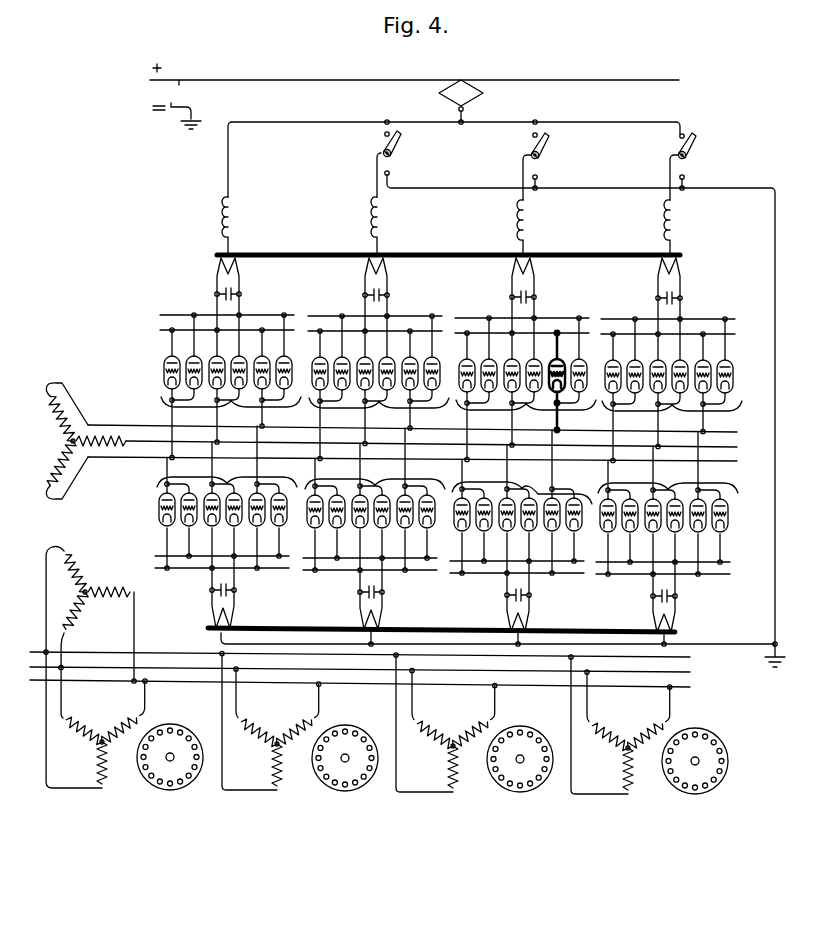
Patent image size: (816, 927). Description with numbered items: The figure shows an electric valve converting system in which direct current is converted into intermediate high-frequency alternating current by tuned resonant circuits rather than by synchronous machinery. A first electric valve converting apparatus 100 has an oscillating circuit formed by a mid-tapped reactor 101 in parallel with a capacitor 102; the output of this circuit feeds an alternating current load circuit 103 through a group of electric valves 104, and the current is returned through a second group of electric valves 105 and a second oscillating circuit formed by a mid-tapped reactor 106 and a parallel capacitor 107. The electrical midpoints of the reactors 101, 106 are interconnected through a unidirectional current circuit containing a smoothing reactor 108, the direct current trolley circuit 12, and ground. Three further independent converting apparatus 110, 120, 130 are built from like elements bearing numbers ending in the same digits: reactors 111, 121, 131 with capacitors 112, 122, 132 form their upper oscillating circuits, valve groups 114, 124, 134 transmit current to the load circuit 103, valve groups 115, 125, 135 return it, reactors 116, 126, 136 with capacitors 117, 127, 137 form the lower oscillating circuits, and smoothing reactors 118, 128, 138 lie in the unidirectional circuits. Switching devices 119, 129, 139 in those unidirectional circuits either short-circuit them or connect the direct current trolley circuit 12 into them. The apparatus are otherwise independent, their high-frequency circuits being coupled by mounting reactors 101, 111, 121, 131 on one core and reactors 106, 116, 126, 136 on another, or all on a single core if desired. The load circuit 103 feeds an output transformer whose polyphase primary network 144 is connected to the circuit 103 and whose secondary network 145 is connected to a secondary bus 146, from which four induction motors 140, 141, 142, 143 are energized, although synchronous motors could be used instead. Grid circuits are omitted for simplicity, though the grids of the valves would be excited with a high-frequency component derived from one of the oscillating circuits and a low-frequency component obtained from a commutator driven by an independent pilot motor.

The direct current trolley circuit 12 is at (177, 107).
The electric valve converting apparatus 100 is at (202, 292).
The mid-tapped reactor 101 is at (240, 267).
The capacitor 102 is at (233, 297).
The alternating current load circuit 103 is at (149, 456).
The group of electric valves 104 is at (231, 424).
The second group of electric valves 105 is at (227, 459).
The mid-tapped reactor 106 is at (211, 621).
The capacitor 107 is at (230, 594).
The smoothing reactor 108 is at (235, 226).
The electric valve converting apparatus 110 is at (351, 293).
The mid-tapped reactor 111 is at (388, 267).
The capacitor 112 is at (381, 298).
The group of electric valves 114 is at (379, 425).
The second group of electric valves 115 is at (375, 461).
The mid-tapped reactor 116 is at (359, 621).
The capacitor 117 is at (378, 596).
The smoothing reactor 118 is at (383, 216).
The switching device 119 is at (392, 151).
The electric valve converting apparatus 120 is at (495, 294).
The mid-tapped reactor 121 is at (535, 267).
The capacitor 122 is at (528, 300).
The group of electric valves 124 is at (526, 427).
The second group of electric valves 125 is at (522, 467).
The mid-tapped reactor 126 is at (506, 624).
The capacitor 127 is at (525, 599).
The smoothing reactor 128 is at (529, 235).
The switching device 129 is at (540, 153).
The electric valve converting apparatus 130 is at (647, 294).
The mid-tapped reactor 131 is at (681, 267).
The capacitor 132 is at (674, 301).
The group of electric valves 134 is at (672, 428).
The second group of electric valves 135 is at (668, 466).
The mid-tapped reactor 136 is at (652, 625).
The capacitor 137 is at (671, 600).
The smoothing reactor 138 is at (677, 218).
The switching device 139 is at (688, 158).
The induction motor 140 is at (138, 803).
The induction motor 141 is at (314, 806).
The induction motor 142 is at (489, 807).
The induction motor 143 is at (662, 809).
The polyphase primary network 144 is at (71, 441).
The secondary network 145 is at (93, 585).
The secondary bus 146 is at (172, 683).